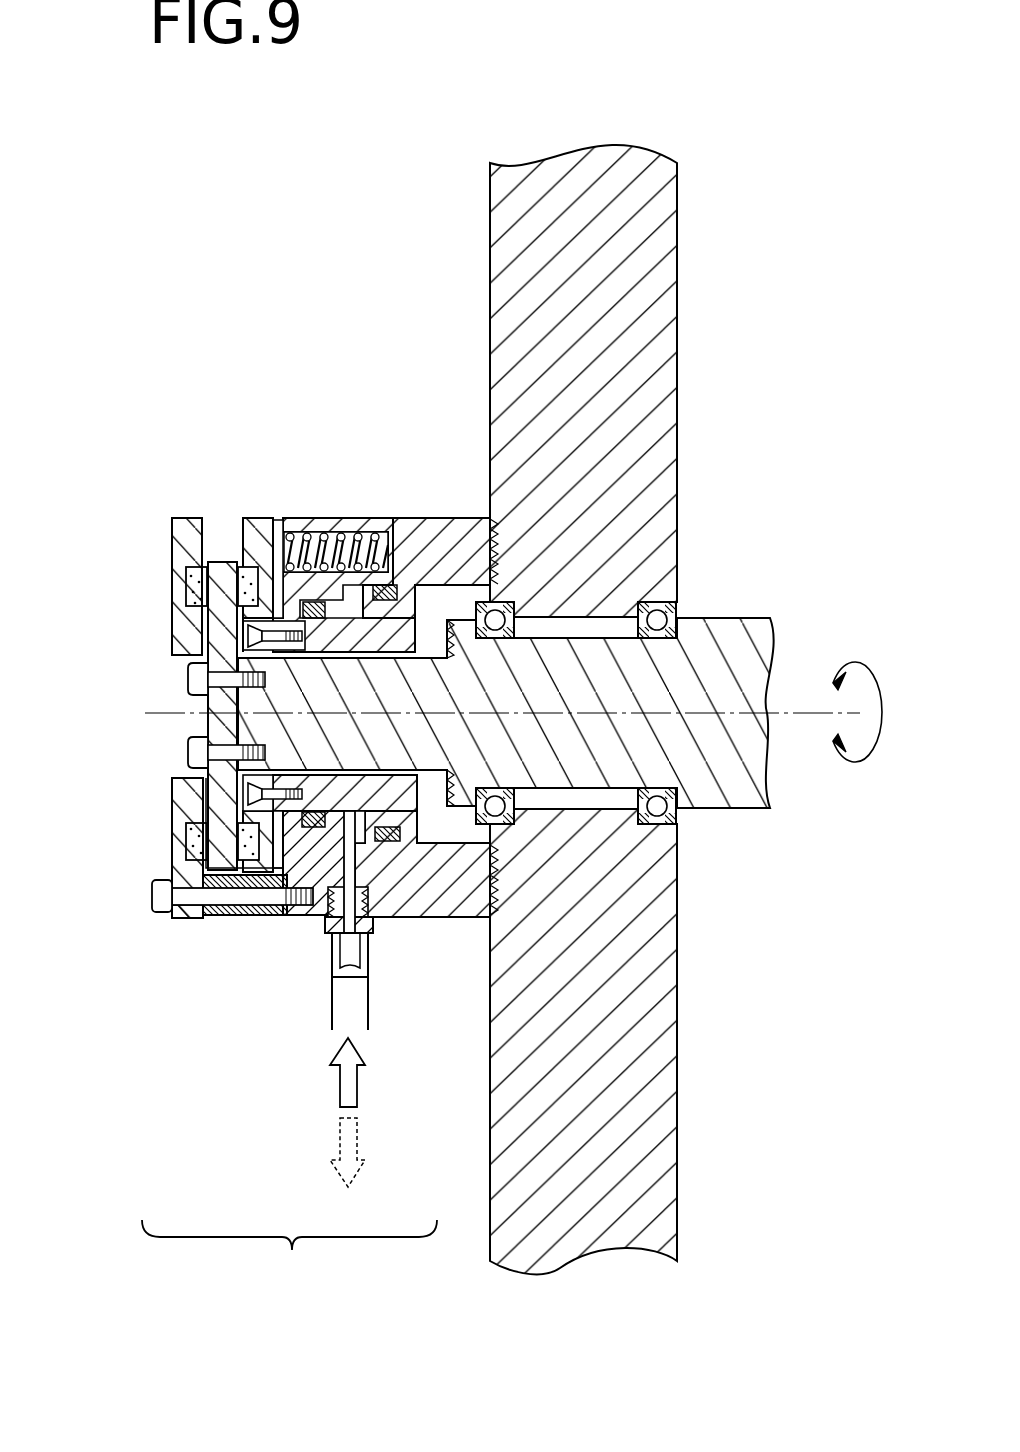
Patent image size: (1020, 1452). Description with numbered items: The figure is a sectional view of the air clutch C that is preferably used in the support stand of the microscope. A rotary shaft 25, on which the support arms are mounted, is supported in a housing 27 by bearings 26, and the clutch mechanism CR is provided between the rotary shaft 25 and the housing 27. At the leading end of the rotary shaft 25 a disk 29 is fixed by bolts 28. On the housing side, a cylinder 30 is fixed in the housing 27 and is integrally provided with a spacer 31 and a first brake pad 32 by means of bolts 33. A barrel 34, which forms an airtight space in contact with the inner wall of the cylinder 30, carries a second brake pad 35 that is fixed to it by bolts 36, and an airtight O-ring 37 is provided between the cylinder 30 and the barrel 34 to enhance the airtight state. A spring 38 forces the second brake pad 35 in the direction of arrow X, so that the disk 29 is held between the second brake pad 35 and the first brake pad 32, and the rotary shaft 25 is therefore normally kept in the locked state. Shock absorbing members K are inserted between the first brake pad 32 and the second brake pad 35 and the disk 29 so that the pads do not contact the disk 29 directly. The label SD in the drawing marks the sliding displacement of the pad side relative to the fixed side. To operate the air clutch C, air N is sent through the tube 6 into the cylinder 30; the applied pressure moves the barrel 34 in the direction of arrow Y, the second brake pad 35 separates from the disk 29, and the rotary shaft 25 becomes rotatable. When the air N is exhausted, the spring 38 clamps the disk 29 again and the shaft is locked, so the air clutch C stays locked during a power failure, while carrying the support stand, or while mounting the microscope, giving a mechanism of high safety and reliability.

The tube 6 is at (370, 985).
The rotary shaft 25 is at (737, 787).
The bearings 26 is at (678, 610).
The housing 27 is at (645, 290).
The bolts 28 is at (193, 680).
The disk 29 is at (222, 562).
The cylinder 30 is at (367, 518).
The spacer 31 is at (230, 916).
The first brake pad 32 is at (187, 919).
The bolts 33 is at (160, 878).
The barrel 34 is at (420, 625).
The second brake pad 35 is at (282, 917).
The bolts 36 is at (200, 793).
The O-ring 37 is at (365, 855).
The spring 38 is at (322, 540).
The shock absorbing members K is at (237, 557).
The air clutch C is at (130, 424).
The clutch mechanism CR is at (289, 1256).
The slide direction SD is at (257, 460).
The air N is at (347, 1135).
The arrow X direction X is at (147, 263).
The arrow Y direction Y is at (347, 263).